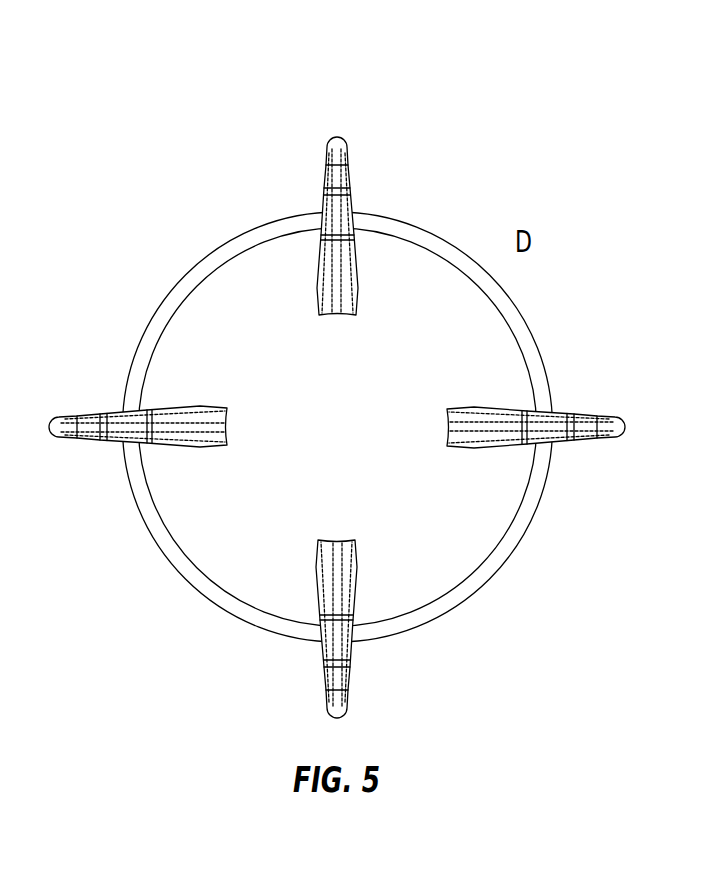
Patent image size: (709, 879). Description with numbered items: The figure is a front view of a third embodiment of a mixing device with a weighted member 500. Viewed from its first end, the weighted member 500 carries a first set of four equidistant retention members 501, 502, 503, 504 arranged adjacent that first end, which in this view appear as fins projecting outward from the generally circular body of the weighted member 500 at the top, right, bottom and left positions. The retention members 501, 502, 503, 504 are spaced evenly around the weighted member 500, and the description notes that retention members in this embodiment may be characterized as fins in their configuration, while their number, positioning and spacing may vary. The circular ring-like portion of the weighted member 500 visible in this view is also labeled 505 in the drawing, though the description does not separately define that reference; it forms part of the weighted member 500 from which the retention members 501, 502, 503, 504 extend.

The weighted member 500 is at (336, 397).
The retention member 501 is at (352, 212).
The retention member 502 is at (538, 429).
The retention member 503 is at (350, 641).
The retention member 504 is at (137, 429).
The ring body 505 is at (187, 347).